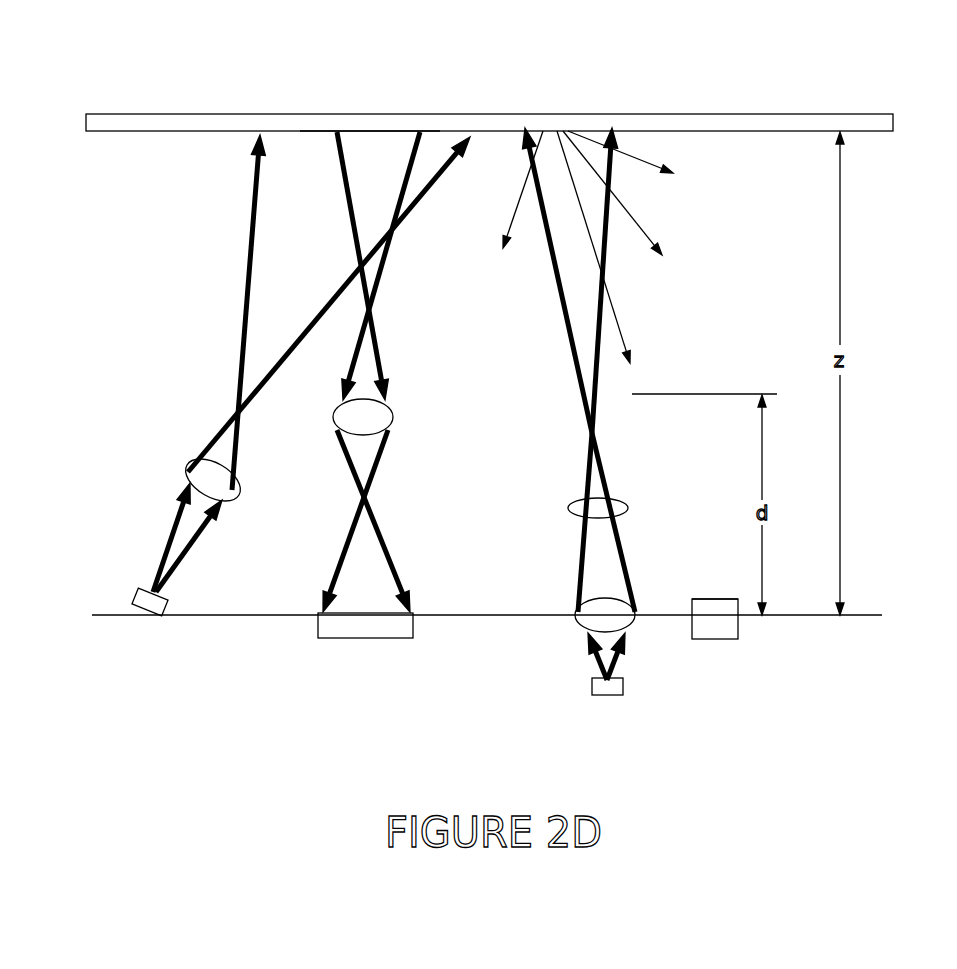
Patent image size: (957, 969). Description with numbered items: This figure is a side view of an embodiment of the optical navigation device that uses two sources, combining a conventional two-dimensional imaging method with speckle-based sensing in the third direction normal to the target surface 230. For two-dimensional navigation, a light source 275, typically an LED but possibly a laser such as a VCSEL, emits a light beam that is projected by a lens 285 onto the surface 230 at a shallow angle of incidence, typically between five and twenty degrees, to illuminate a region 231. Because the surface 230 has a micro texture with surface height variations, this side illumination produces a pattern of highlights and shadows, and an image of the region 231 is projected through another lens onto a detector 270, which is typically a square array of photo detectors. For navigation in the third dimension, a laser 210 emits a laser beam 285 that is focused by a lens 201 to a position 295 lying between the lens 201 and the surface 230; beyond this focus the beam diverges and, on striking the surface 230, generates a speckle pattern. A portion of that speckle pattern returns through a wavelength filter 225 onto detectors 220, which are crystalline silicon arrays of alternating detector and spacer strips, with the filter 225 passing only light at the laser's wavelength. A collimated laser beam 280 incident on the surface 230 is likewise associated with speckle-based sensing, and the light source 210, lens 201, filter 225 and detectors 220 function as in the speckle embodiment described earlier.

The target surface 230 is at (866, 114).
The region 231 is at (364, 130).
The light source 275 is at (148, 615).
The lens 285 is at (195, 473).
The laser beam 280 is at (378, 413).
The detector 270 is at (352, 632).
The laser 210 is at (592, 685).
The lens 201 is at (598, 607).
The position 295 is at (590, 430).
The detectors 220 is at (717, 628).
The wavelength filter 225 is at (712, 608).